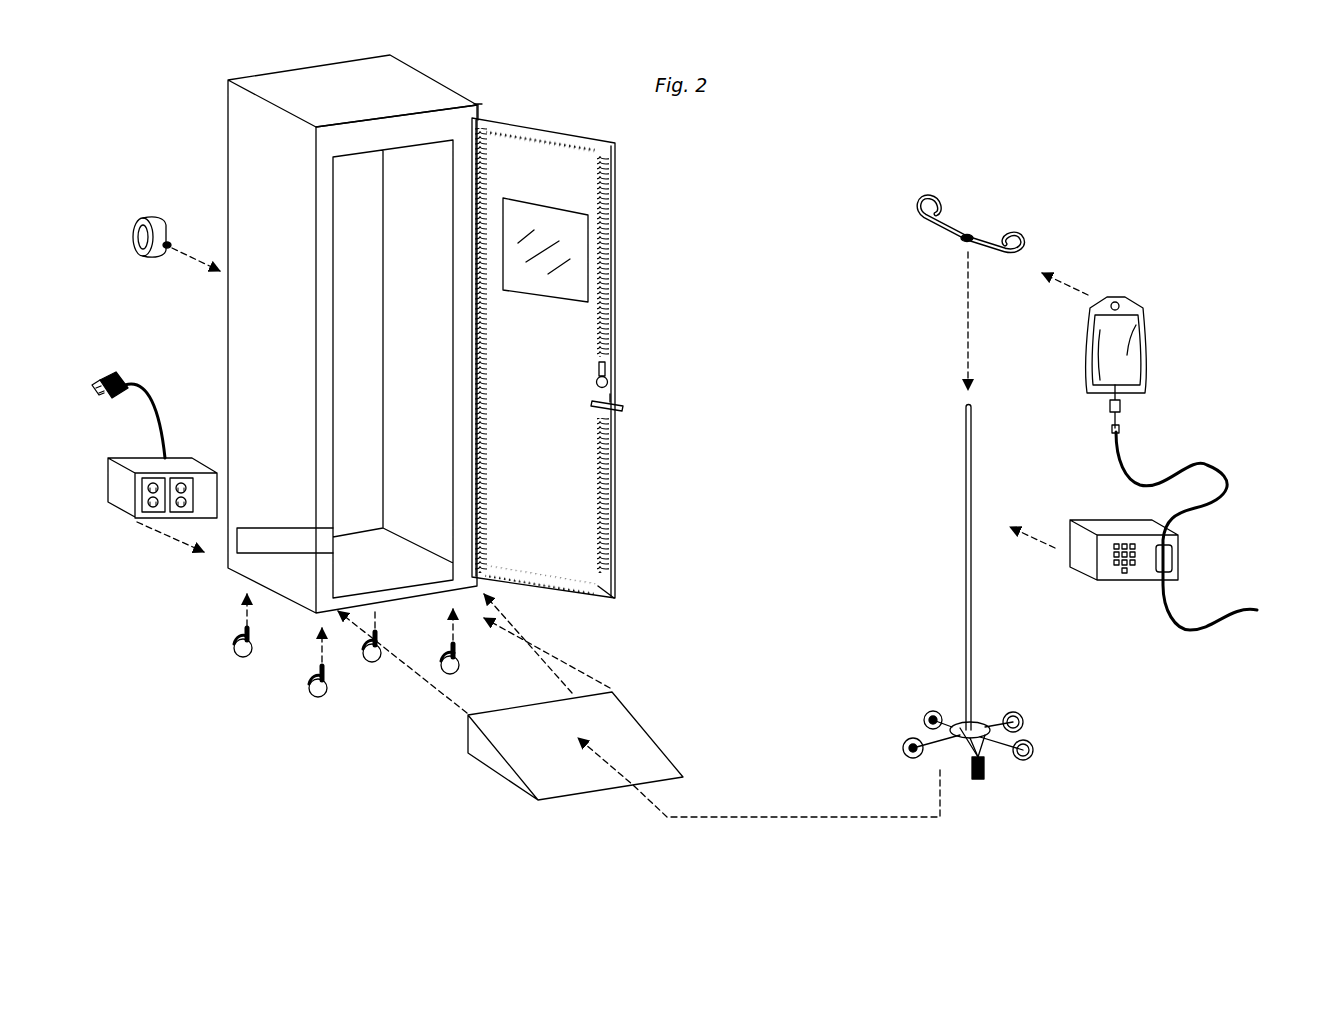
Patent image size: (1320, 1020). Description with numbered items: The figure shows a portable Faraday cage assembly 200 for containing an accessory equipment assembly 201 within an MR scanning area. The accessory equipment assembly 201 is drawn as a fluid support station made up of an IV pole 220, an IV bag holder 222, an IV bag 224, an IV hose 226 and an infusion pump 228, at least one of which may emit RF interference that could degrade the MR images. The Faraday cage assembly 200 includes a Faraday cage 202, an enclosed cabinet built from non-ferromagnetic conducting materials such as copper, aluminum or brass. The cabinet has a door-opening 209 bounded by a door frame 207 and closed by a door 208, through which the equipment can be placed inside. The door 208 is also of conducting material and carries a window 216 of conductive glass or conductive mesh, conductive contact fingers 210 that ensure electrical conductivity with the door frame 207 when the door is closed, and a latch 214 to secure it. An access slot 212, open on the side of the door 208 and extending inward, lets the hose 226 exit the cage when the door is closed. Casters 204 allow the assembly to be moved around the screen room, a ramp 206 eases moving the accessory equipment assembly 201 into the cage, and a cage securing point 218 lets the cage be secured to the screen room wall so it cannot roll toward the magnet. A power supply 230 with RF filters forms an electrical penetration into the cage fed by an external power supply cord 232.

The Faraday cage assembly 200 is at (353, 762).
The accessory equipment assembly 201 is at (1026, 797).
The Faraday cage 202 is at (320, 334).
The casters 204 is at (237, 657).
The ramp 206 is at (490, 757).
The door frame 207 is at (343, 135).
The door 208 is at (586, 365).
The door-opening 209 is at (339, 364).
The conductive contact fingers 210 is at (592, 593).
The access slot 212 is at (610, 398).
The latch 214 is at (605, 372).
The window 216 is at (572, 247).
The cage securing point 218 is at (133, 228).
The IV pole 220 is at (972, 650).
The IV bag holder 222 is at (960, 246).
The IV bag 224 is at (1127, 348).
The IV hose 226 is at (1198, 462).
The infusion pump 228 is at (1087, 558).
The power supply 230 is at (132, 497).
The external power supply cord 232 is at (108, 382).